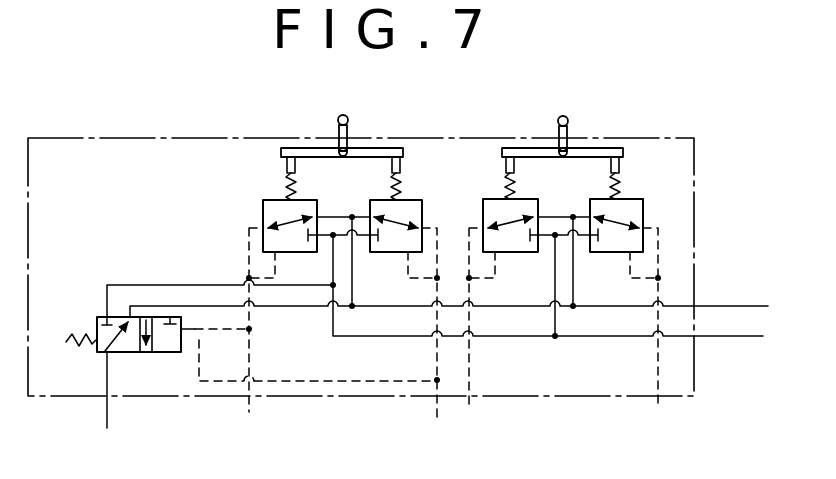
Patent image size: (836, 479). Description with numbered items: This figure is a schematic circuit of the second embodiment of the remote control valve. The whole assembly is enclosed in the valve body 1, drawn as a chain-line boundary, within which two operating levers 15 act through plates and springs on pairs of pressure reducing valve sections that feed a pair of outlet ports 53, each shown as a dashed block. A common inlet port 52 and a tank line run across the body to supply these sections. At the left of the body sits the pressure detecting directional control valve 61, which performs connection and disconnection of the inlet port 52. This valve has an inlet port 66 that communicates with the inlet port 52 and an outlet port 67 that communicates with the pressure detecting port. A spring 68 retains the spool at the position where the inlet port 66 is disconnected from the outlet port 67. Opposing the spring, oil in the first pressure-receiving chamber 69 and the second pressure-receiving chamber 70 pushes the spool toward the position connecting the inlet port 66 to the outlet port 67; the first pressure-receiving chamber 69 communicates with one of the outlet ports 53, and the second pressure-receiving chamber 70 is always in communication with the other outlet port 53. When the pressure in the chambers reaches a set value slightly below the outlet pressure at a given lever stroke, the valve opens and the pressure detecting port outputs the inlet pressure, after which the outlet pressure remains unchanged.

The valve body 1 is at (695, 227).
The operating lever 15 is at (348, 118).
The inlet port 52 is at (377, 305).
The outlet ports 53 is at (249, 412).
The pressure detecting directional control valve 61 is at (183, 347).
The inlet port 66 is at (102, 317).
The outlet port 67 is at (103, 355).
The spring 68 is at (78, 335).
The first pressure-receiving chamber 69 is at (233, 365).
The second pressure-receiving chamber 70 is at (186, 343).